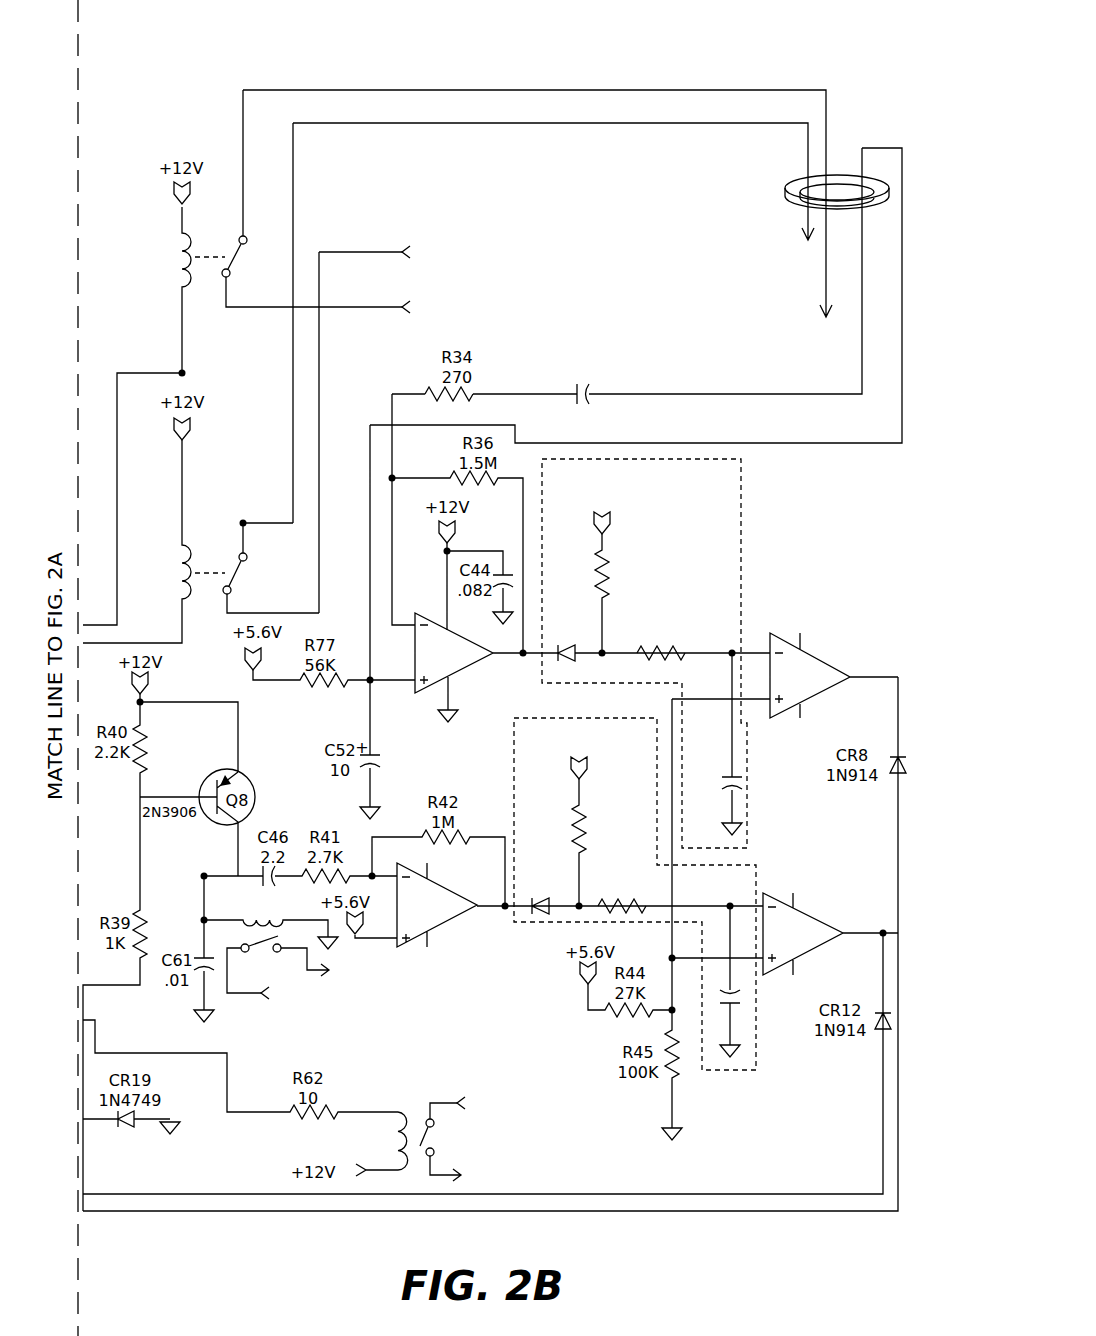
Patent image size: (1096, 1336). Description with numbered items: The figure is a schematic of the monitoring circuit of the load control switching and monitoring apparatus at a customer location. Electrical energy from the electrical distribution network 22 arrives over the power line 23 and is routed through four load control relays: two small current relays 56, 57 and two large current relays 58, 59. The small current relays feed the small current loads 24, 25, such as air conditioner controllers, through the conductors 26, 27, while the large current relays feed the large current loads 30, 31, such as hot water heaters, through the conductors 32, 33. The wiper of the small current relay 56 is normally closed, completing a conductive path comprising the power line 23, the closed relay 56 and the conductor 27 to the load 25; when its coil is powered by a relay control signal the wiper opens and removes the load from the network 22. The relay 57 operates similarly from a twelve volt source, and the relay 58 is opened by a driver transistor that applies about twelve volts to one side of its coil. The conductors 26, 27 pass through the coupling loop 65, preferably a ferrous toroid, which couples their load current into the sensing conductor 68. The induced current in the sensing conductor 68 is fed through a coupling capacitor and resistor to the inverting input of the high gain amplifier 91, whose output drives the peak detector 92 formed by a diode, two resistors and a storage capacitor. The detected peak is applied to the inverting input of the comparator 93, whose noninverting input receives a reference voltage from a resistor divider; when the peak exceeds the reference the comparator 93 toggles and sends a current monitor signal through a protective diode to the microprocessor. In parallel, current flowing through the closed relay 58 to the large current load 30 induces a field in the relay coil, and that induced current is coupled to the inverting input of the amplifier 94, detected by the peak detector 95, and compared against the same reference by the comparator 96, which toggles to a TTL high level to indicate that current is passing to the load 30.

The electrical distribution network 22 is at (463, 683).
The power line 23 is at (340, 252).
The small current load 24 is at (807, 355).
The small current load 25 is at (772, 279).
The conductor 26 is at (826, 90).
The conductor 27 is at (608, 125).
The large current load 30 is at (450, 969).
The large current load 31 is at (599, 1173).
The conductor 32 is at (308, 958).
The conductor 33 is at (440, 1168).
The small current relay 56 is at (245, 560).
The small current relay 57 is at (233, 273).
The large current relay 58 is at (244, 955).
The large current relay 59 is at (440, 1122).
The coupling loop 65 is at (878, 208).
The sensing conductor 68 is at (902, 360).
The amplifier 91 is at (432, 657).
The peak detector 92 is at (741, 500).
The comparator 93 is at (789, 684).
The amplifier 94 is at (414, 914).
The peak detector 95 is at (513, 775).
The comparator 96 is at (786, 942).